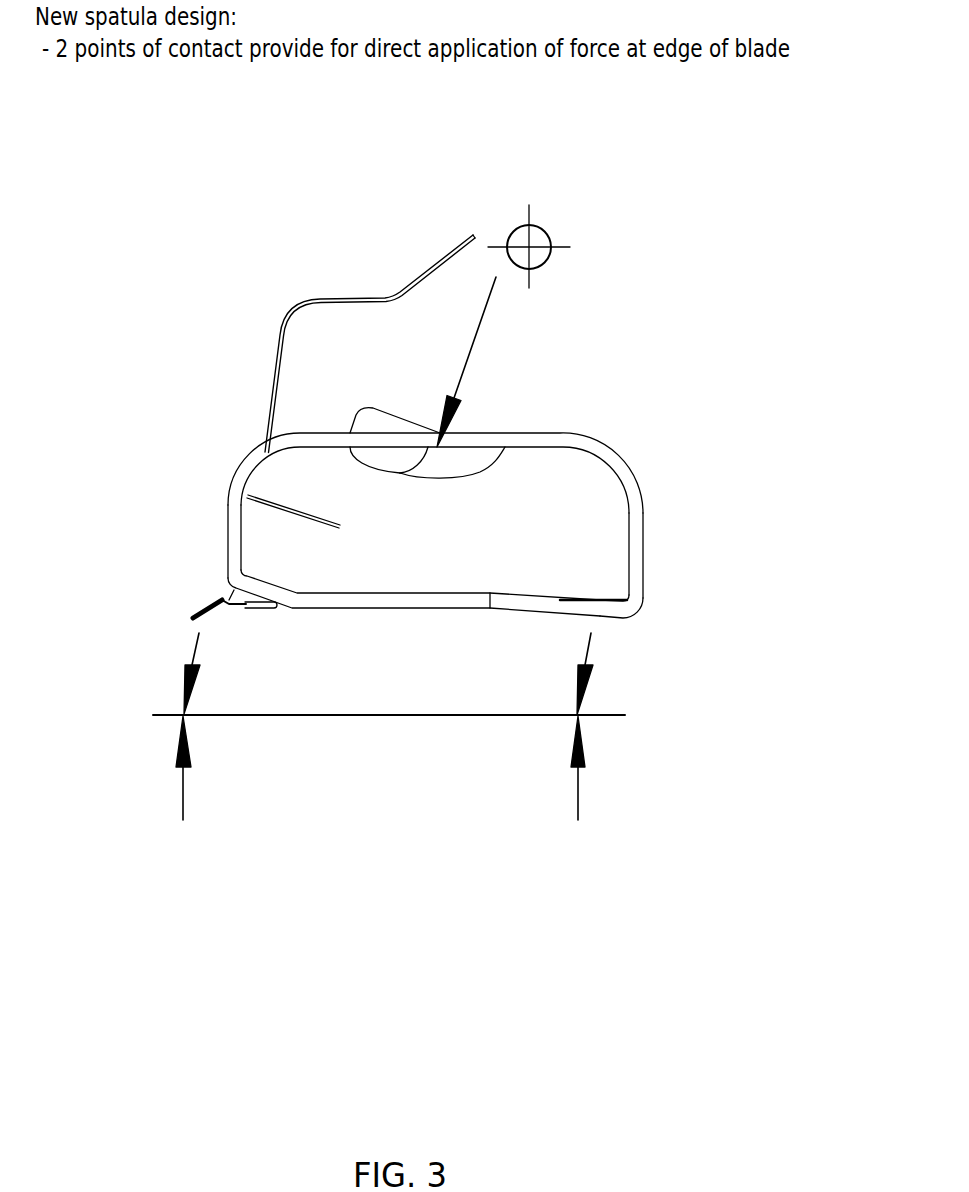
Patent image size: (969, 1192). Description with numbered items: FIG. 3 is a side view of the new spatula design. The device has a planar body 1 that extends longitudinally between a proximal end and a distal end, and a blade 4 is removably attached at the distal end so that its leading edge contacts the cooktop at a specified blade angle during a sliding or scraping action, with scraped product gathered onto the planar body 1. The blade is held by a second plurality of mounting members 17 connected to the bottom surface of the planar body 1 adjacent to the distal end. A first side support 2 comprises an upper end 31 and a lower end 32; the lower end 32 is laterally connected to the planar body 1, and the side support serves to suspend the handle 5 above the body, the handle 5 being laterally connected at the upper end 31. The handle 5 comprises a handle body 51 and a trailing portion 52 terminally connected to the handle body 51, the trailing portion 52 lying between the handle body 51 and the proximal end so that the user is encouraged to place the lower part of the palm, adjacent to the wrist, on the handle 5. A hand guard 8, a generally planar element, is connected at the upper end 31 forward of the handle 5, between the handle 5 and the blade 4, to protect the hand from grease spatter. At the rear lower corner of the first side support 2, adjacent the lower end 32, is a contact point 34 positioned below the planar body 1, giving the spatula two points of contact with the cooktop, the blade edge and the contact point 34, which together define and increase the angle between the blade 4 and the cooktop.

The planar body 1 is at (598, 597).
The first side support 2 is at (449, 523).
The blade 4 is at (226, 585).
The handle 5 is at (421, 442).
The hand guard 8 is at (336, 298).
The second plurality of mounting members 17 is at (277, 608).
The upper end 31 is at (532, 418).
The lower end 32 is at (433, 632).
The contact point 34 is at (633, 608).
The handle body 51 is at (388, 418).
The trailing portion 52 is at (460, 472).